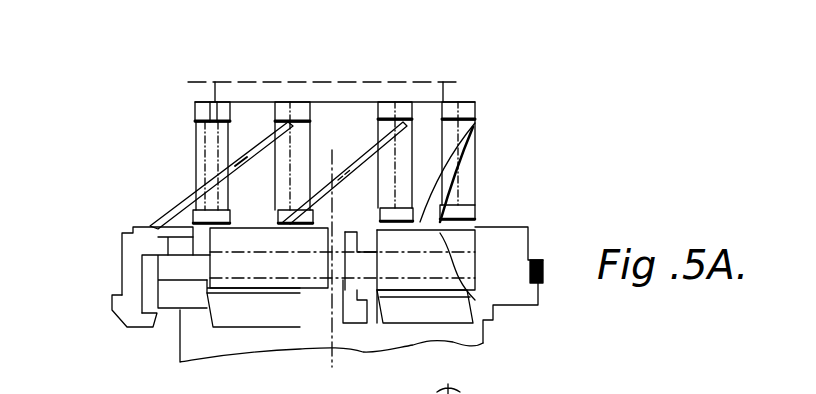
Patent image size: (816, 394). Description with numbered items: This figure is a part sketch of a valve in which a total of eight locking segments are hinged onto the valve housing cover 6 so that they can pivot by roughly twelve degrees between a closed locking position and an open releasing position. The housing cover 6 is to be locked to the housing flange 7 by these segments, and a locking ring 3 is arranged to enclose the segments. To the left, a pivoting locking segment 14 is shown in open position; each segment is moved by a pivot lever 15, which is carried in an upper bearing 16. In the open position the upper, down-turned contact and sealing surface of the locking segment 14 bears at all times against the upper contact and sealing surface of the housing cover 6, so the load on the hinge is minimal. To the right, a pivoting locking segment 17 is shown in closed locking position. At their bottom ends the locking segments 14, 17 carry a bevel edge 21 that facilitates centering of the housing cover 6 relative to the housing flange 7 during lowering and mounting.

The locking ring 3 is at (543, 270).
The housing cover 6 is at (493, 260).
The housing flange 7 is at (490, 290).
The pivoting locking segment in open position 14 is at (123, 270).
The pivot lever 15 is at (263, 170).
The upper bearing 16 is at (470, 108).
The pivoting locking segment in closed position 17 is at (500, 228).
The bevel edge 21 is at (155, 313).